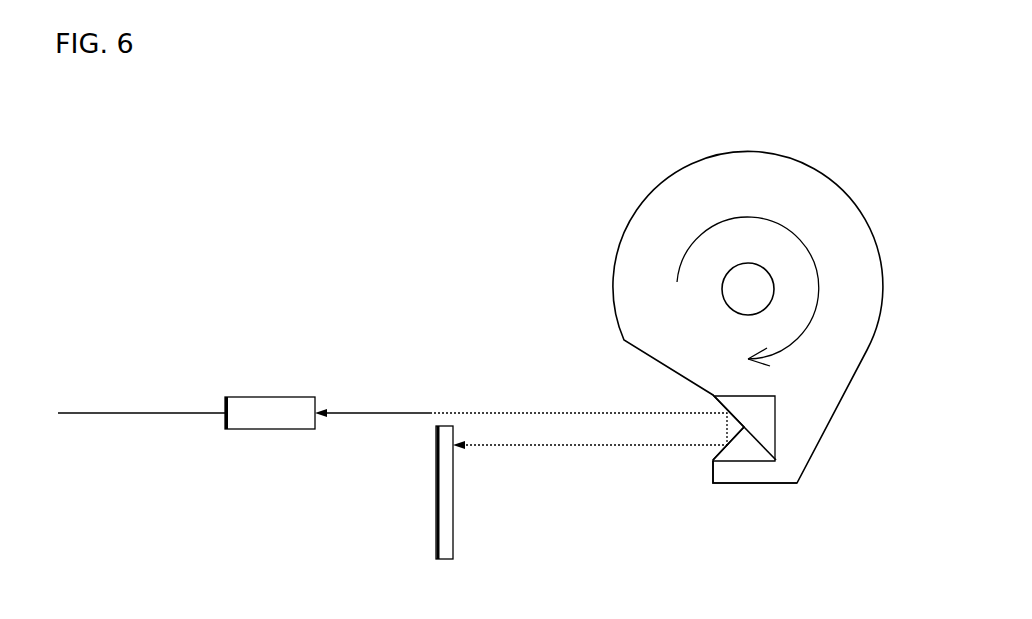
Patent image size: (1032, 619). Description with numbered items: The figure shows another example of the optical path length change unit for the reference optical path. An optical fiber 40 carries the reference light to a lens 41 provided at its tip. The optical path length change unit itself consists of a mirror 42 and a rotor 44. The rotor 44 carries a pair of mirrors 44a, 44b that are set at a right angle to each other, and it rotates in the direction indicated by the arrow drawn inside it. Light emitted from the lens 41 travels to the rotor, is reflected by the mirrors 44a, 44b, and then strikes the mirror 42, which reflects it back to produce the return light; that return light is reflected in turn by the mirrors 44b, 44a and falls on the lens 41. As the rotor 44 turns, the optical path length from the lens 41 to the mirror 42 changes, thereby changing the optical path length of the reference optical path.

The optical fiber 40 is at (117, 412).
The lens 41 is at (268, 397).
The mirror 42 is at (453, 529).
The rotor 44 is at (785, 157).
The mirror 44a is at (757, 415).
The mirror 44b is at (745, 452).